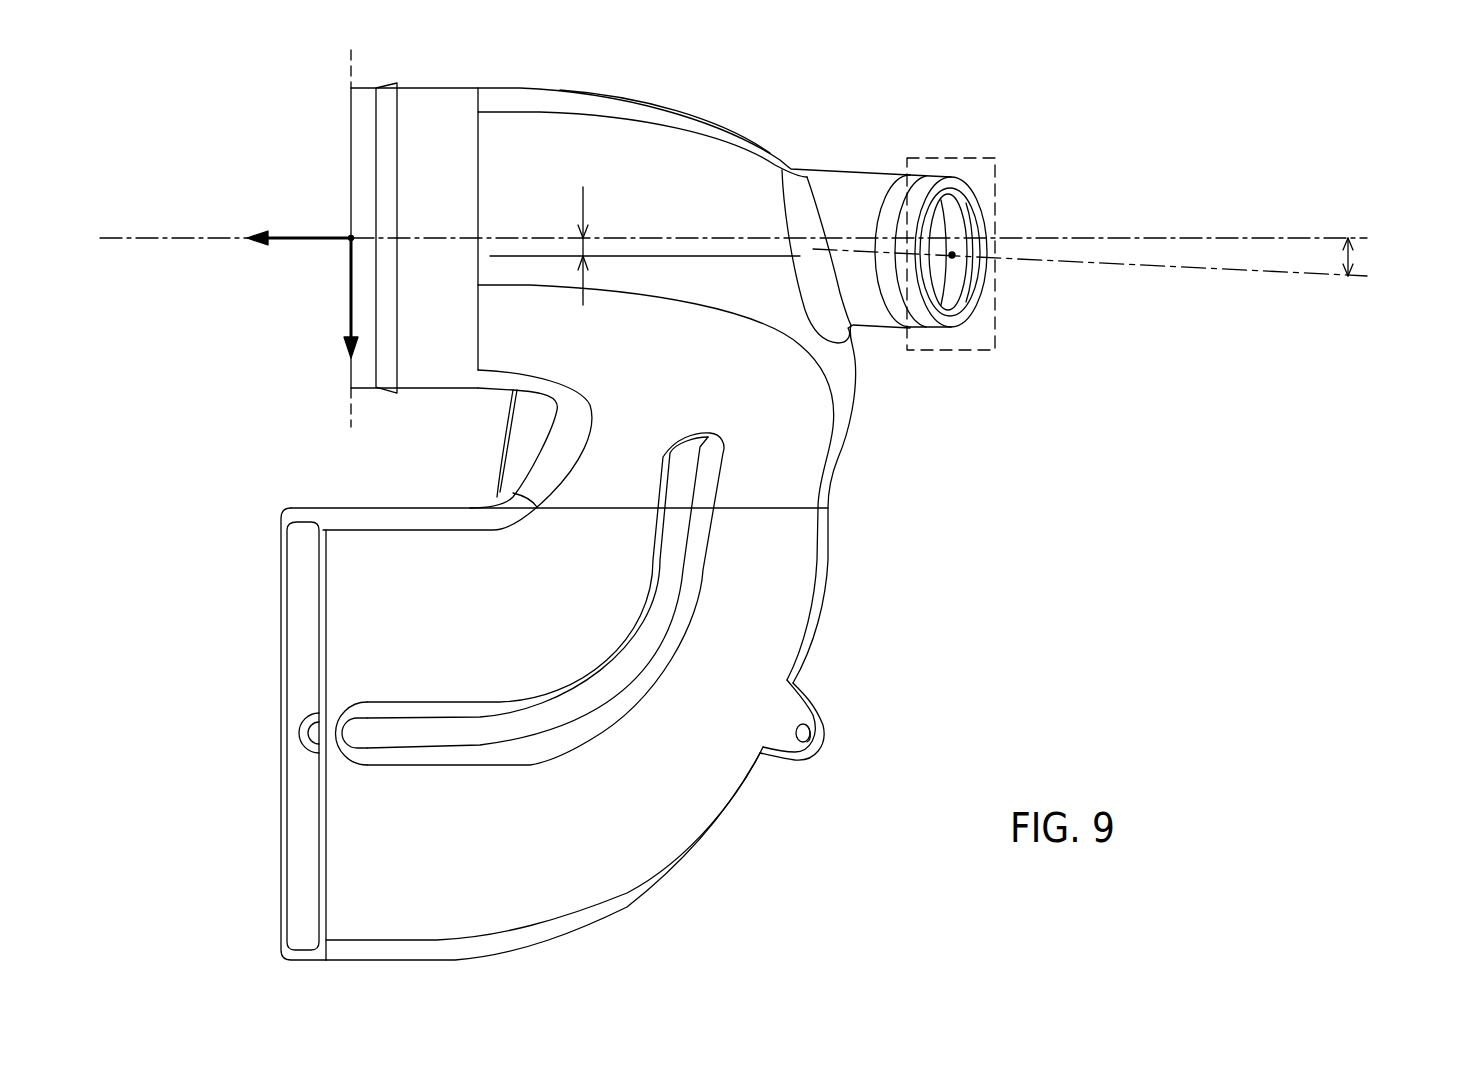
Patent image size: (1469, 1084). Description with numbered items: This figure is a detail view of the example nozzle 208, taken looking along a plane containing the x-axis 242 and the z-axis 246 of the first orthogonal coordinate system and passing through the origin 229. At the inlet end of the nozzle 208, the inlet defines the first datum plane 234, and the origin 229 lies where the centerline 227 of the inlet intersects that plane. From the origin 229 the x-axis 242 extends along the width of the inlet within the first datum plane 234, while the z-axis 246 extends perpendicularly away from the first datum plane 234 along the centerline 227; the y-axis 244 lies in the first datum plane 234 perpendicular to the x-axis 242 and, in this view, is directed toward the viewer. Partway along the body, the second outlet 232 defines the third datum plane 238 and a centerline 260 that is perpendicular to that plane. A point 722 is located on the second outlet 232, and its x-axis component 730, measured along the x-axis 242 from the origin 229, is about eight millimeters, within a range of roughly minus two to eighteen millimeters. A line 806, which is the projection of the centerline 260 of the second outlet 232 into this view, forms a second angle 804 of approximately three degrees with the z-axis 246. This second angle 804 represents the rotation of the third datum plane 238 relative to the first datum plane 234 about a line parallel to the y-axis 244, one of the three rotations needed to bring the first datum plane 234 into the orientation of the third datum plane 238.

The nozzle 208 is at (595, 524).
The centerline 227 is at (695, 238).
The origin 229 is at (282, 192).
The second outlet 232 is at (960, 327).
The first datum plane 234 is at (350, 72).
The third datum plane 238 is at (993, 330).
The x-axis 242 is at (351, 296).
The y-axis 244 is at (351, 238).
The z-axis 246 is at (297, 240).
The centerline 260 is at (1287, 275).
The point 722 is at (952, 255).
The x-axis component 730 is at (583, 200).
The second angle 804 is at (1353, 260).
The line 806 is at (1110, 298).